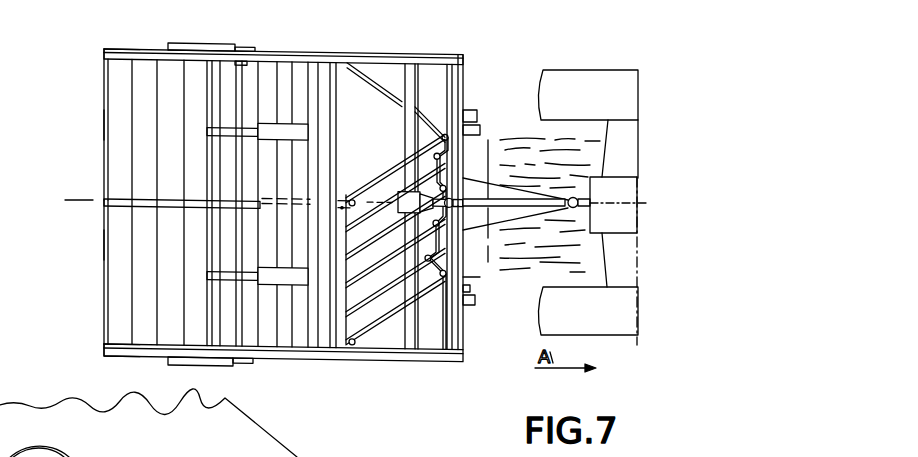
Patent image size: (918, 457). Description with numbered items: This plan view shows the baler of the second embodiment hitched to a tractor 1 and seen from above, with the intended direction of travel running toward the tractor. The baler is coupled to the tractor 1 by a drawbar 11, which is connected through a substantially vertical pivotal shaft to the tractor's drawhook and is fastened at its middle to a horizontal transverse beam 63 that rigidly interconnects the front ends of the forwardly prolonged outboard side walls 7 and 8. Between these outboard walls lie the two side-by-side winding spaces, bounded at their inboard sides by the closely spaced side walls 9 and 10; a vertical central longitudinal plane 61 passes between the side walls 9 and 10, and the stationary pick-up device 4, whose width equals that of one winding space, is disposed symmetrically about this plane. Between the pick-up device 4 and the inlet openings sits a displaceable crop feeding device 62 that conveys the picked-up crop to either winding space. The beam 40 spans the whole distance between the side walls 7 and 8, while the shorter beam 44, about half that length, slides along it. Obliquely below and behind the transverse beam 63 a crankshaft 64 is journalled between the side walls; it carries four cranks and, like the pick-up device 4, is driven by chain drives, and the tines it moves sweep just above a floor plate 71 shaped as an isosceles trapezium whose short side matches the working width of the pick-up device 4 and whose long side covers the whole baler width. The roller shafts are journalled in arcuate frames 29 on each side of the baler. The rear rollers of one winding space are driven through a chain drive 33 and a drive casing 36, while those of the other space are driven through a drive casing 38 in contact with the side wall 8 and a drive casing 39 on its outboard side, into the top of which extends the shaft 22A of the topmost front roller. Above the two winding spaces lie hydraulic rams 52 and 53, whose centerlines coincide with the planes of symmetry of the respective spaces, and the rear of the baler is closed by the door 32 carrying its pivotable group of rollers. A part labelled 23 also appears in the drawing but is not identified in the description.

The tractor 1 is at (565, 66).
The pick-up device 4 is at (485, 141).
The side wall 7 is at (114, 338).
The side wall 8 is at (113, 62).
The side wall 9 is at (125, 208).
The side wall 10 is at (117, 197).
The drawbar 11 is at (510, 221).
The shaft 22A is at (238, 83).
The roller 23 is at (68, 447).
The frame 29 is at (321, 362).
The door 32 is at (99, 115).
The chain drive 33 is at (187, 360).
The drive casing 36 is at (123, 352).
The drive casing 38 is at (141, 22).
The drive casing 39 is at (208, 23).
The beam 40 is at (325, 106).
The beam 44 is at (350, 191).
The hydraulic ram 52 is at (272, 252).
The hydraulic ram 53 is at (272, 107).
The vertical central longitudinal plane 61 is at (88, 180).
The crop feeding device 62 is at (386, 172).
The transverse beam 63 is at (462, 95).
The crankshaft 64 is at (438, 318).
The floor plate 71 is at (358, 78).